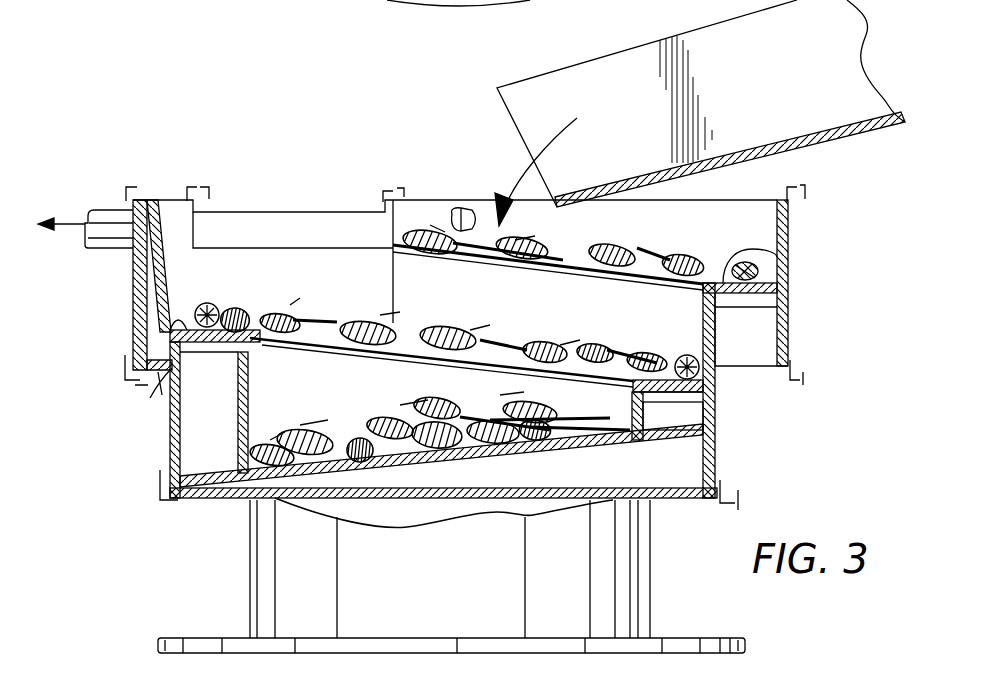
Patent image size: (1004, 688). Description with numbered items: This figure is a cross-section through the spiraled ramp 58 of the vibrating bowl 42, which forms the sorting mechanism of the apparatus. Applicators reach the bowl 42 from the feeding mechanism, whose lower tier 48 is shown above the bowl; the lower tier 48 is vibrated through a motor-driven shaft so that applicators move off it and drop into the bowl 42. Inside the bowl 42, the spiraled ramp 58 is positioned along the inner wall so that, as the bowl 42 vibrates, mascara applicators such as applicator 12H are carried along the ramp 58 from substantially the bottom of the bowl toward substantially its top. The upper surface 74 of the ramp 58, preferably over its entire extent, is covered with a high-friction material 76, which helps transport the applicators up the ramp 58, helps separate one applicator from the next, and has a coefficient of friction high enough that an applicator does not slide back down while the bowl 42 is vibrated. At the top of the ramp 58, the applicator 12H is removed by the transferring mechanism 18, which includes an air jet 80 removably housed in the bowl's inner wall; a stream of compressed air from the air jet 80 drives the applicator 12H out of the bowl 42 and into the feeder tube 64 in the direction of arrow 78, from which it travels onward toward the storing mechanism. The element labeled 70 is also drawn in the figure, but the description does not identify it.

The transferring mechanism 18 is at (379, 186).
The feeder tube 64 is at (265, 200).
The arrow 78 is at (60, 222).
The air jet 80 is at (477, 211).
The feed conduit 70 is at (527, 0).
The lower tier 48 is at (827, 142).
The high-friction material 76 is at (790, 250).
The spiraled ramp 58 is at (747, 308).
The bowl 42 is at (716, 423).
The upper surface 74 is at (148, 392).
The applicator 12H is at (408, 258).